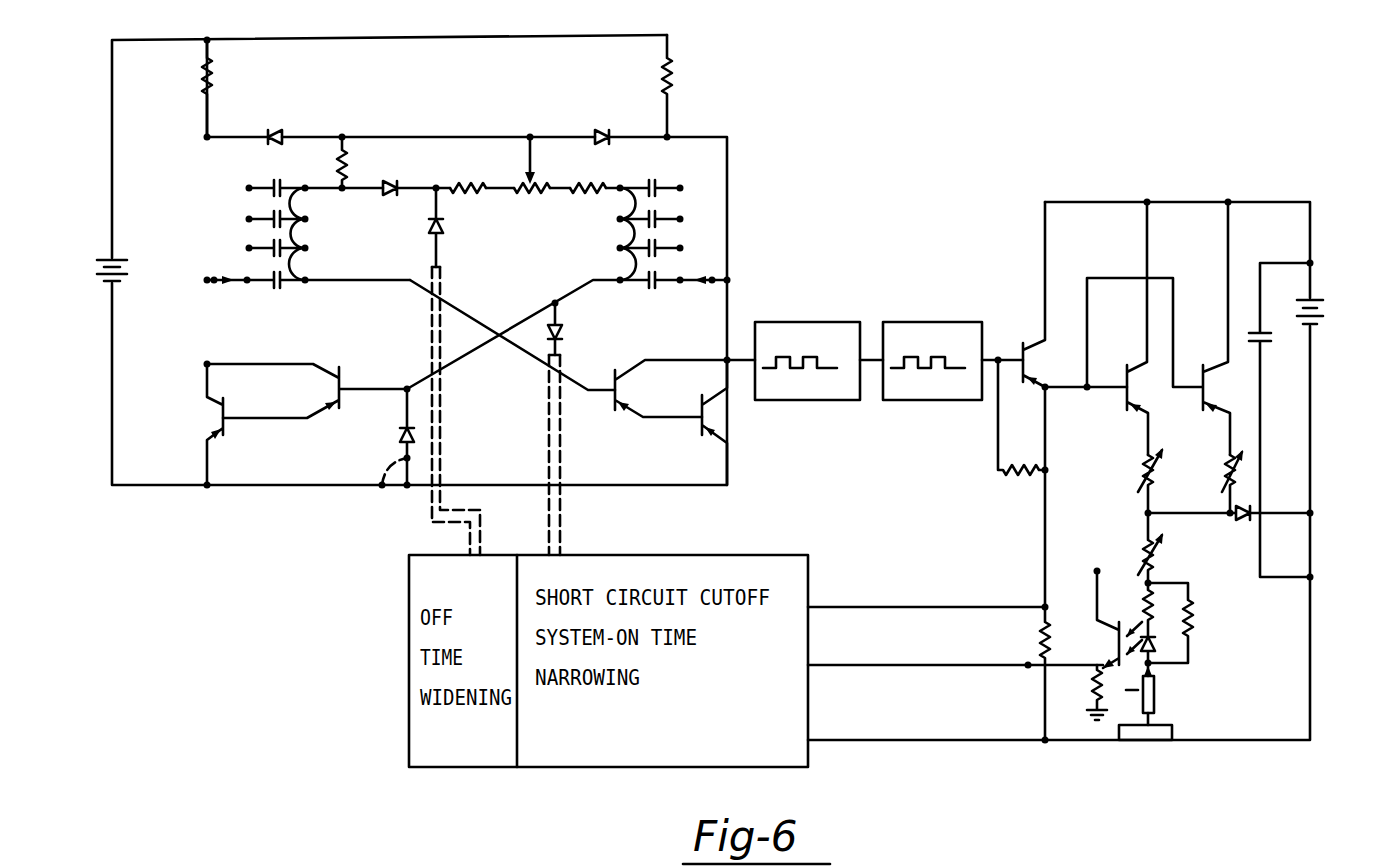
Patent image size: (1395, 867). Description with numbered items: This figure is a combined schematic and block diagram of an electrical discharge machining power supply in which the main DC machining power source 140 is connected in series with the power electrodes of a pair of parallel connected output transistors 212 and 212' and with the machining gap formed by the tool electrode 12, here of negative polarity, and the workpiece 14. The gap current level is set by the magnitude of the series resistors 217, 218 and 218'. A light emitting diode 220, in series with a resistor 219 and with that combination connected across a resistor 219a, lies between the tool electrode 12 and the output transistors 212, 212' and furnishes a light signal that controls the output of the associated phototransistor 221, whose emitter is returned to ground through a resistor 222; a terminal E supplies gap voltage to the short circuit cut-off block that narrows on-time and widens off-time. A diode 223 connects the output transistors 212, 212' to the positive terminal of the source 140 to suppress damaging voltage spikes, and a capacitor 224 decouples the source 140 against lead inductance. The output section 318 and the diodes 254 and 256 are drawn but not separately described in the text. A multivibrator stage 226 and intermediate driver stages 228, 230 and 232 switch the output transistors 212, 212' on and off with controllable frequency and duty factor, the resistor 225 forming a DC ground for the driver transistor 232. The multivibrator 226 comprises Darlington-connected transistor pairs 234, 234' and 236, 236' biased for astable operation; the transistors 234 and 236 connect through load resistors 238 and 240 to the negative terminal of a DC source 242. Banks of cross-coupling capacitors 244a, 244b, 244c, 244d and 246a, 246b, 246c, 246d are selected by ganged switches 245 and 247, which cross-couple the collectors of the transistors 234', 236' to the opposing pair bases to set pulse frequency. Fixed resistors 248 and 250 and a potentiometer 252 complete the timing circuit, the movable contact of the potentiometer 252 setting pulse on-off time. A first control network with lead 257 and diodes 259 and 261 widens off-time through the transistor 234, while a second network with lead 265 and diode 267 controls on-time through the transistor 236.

The tool electrode 12 is at (1157, 697).
The workpiece 14 is at (1172, 732).
The main DC machining power source 140 is at (1316, 326).
The output transistor 212 is at (1120, 328).
The output transistor 212' is at (1162, 328).
The series resistor 217 is at (1140, 466).
The series resistor 218 is at (1205, 470).
The series resistor 218' is at (1189, 550).
The resistor 219 is at (1150, 606).
The resistor 219a is at (1193, 618).
The light emitting diode 220 is at (1157, 645).
The phototransistor 221 is at (1126, 620).
The resistor 222 is at (1093, 684).
The diode 223 is at (1240, 521).
The capacitor 224 is at (1268, 350).
The resistor 225 is at (1040, 638).
The multivibrator stage 226 is at (545, 273).
The intermediate driver stage 228 is at (868, 291).
The intermediate driver stage 230 is at (975, 291).
The driver transistor 232 is at (1028, 340).
The multivibrator transistor 234 is at (252, 426).
The multivibrator transistor 234' is at (313, 378).
The multivibrator transistor 236 is at (755, 422).
The multivibrator transistor 236' is at (673, 387).
The load resistor 238 is at (215, 82).
The load resistor 240 is at (672, 72).
The DC source 242 is at (120, 262).
The cross-coupling capacitor 244a is at (287, 164).
The cross-coupling capacitor 244b is at (283, 216).
The cross-coupling capacitor 244c is at (283, 245).
The cross-coupling capacitor 244d is at (282, 290).
The switch 245 is at (232, 290).
The cross-coupling capacitor 246a is at (702, 160).
The cross-coupling capacitor 246b is at (656, 214).
The cross-coupling capacitor 246c is at (656, 244).
The cross-coupling capacitor 246d is at (656, 275).
The switch 247 is at (687, 292).
The fixed resistor 248 is at (455, 183).
The fixed resistor 250 is at (580, 192).
The potentiometer 252 is at (528, 196).
The diode 254 is at (283, 130).
The diode 256 is at (604, 129).
The lead 257 is at (441, 436).
The diode 259 is at (430, 230).
The diode 261 is at (422, 157).
The lead 265 is at (562, 466).
The diode 267 is at (563, 333).
The control circuit 318 is at (1263, 192).